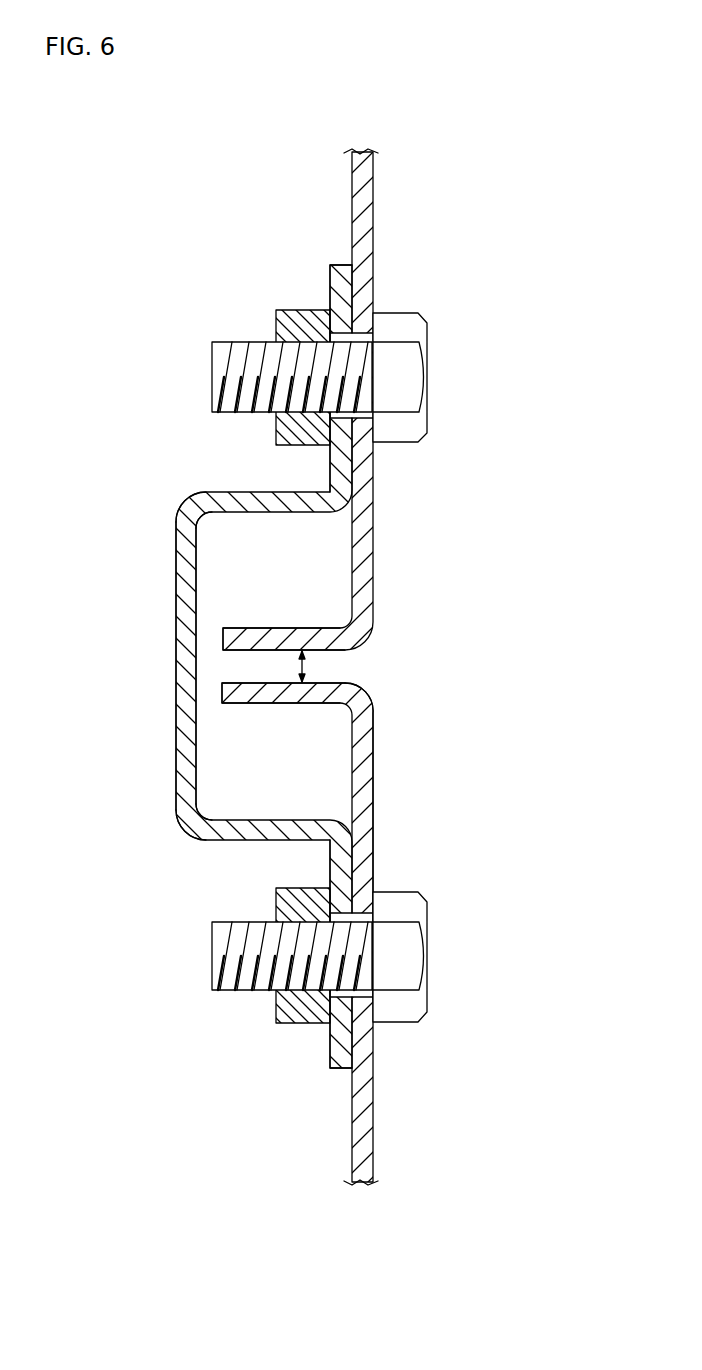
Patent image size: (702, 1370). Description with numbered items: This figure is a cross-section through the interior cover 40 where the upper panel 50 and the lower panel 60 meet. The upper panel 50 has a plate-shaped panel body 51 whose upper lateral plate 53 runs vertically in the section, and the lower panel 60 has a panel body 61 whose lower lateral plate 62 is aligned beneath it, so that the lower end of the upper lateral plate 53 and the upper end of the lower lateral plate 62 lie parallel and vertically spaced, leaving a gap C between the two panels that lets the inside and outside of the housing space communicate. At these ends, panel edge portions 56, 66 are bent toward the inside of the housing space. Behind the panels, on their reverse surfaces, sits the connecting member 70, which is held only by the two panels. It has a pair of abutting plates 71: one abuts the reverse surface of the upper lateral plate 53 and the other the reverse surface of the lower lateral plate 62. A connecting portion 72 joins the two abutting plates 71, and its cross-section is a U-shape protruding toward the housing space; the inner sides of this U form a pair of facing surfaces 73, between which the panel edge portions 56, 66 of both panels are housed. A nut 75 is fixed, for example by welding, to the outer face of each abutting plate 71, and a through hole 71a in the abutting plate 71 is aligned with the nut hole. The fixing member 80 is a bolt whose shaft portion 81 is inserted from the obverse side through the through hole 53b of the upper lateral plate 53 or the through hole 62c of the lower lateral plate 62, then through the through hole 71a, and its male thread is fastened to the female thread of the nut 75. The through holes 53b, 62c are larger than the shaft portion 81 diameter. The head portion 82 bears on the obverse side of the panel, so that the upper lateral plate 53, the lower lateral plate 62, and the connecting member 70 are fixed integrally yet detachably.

The interior cover 40 is at (497, 153).
The upper panel 50 is at (397, 156).
The panel body 51 is at (378, 196).
The upper lateral plate 53 is at (362, 230).
The through hole 53b is at (362, 340).
The panel edge portion 56 is at (293, 642).
The lower panel 60 is at (395, 1130).
The panel body 61 is at (380, 1103).
The lower lateral plate 62 is at (365, 800).
The through hole 62c is at (360, 990).
The panel edge portion 66 is at (278, 692).
The connecting member 70 is at (174, 795).
The abutting plate 71 is at (342, 266).
The through hole 71a is at (348, 410).
The connecting portion 72 is at (188, 636).
The facing surfaces 73 is at (248, 516).
The nut 75 is at (290, 316).
The fixing member 80 is at (433, 378).
The shaft portion 81 is at (240, 360).
The head portion 82 is at (422, 333).
The gap C is at (310, 664).